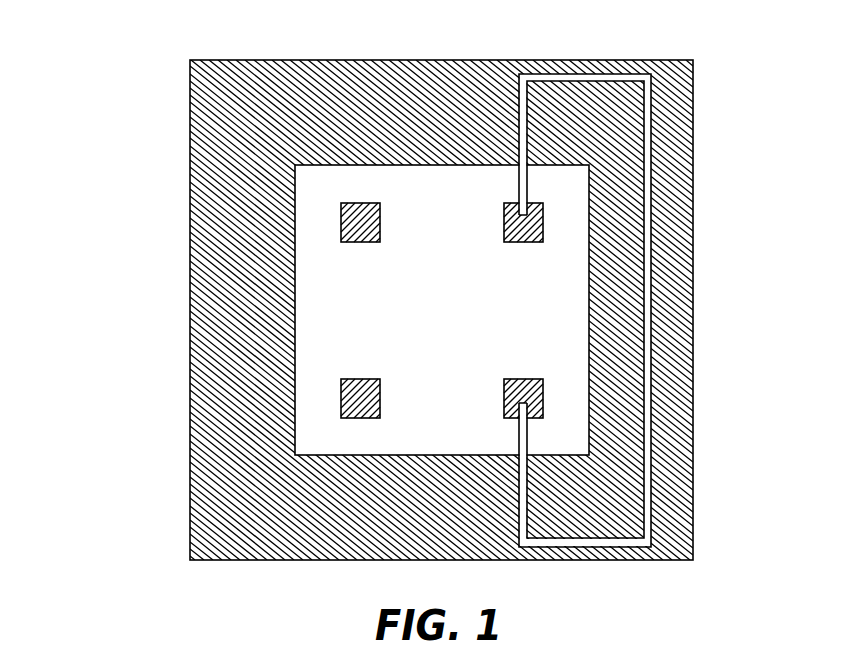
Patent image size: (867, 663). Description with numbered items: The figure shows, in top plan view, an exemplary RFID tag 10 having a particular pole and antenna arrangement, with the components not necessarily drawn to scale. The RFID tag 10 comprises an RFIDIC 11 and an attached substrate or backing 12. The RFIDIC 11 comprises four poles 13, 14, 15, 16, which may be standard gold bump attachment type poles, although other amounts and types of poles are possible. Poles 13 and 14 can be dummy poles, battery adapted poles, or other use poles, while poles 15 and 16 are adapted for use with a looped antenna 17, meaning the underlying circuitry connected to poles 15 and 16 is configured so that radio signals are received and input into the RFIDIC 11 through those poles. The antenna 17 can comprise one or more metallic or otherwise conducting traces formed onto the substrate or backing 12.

The RFID tag 10 is at (126, 62).
The RFIDIC 11 is at (337, 310).
The substrate or backing 12 is at (225, 488).
The pole 13 is at (343, 217).
The pole 14 is at (343, 393).
The pole 15 is at (507, 223).
The pole 16 is at (507, 390).
The antenna 17 is at (647, 342).